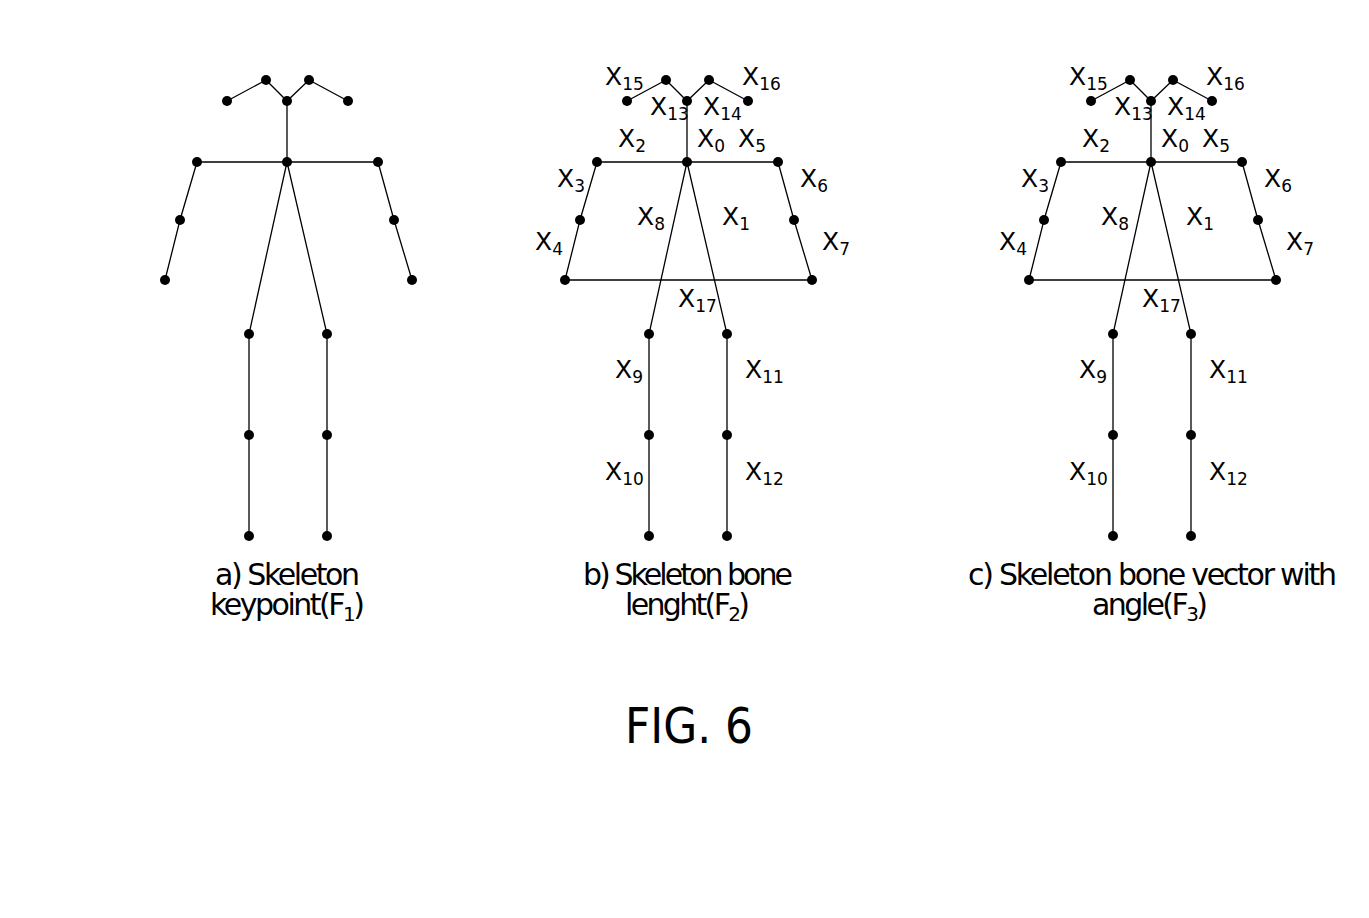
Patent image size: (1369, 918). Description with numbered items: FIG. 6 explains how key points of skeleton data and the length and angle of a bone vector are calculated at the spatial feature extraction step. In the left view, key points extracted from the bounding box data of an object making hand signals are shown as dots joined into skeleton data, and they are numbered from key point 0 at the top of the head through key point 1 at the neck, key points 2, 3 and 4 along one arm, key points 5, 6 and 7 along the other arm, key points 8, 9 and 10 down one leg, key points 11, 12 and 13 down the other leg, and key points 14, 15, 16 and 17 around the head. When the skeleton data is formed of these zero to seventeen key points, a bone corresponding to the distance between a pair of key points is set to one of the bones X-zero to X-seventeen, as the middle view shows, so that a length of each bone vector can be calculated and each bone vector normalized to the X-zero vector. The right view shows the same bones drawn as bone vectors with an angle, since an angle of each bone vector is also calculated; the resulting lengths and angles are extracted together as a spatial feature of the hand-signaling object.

The key point 0 is at (298, 108).
The key point 1 is at (300, 175).
The key point 2 is at (202, 146).
The key point 3 is at (168, 213).
The key point 4 is at (152, 273).
The key point 5 is at (380, 146).
The key point 6 is at (409, 213).
The key point 7 is at (428, 273).
The key point 8 is at (234, 333).
The key point 9 is at (234, 433).
The key point 10 is at (232, 533).
The key point 11 is at (340, 333).
The key point 12 is at (340, 433).
The key point 13 is at (340, 533).
The key point 14 is at (262, 65).
The key point 15 is at (314, 65).
The key point 16 is at (215, 90).
The key point 17 is at (360, 90).